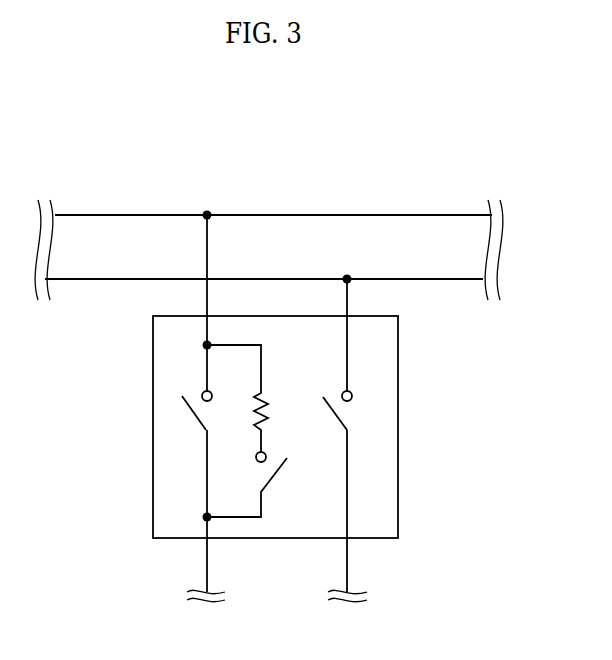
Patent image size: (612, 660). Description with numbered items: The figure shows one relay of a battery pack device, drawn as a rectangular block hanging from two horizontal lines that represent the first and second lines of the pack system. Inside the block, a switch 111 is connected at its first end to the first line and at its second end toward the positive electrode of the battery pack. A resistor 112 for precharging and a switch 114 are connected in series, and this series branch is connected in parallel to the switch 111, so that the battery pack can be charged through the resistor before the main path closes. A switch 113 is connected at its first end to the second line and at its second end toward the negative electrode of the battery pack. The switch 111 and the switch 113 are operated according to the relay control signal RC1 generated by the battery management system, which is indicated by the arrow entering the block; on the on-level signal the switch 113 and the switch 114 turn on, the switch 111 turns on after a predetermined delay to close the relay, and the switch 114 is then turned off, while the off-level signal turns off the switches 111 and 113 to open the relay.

The relay control signal RC1 is at (141, 427).
The switch 111 is at (188, 393).
The resistor 112 is at (270, 408).
The switch 113 is at (347, 412).
The switch 114 is at (280, 475).